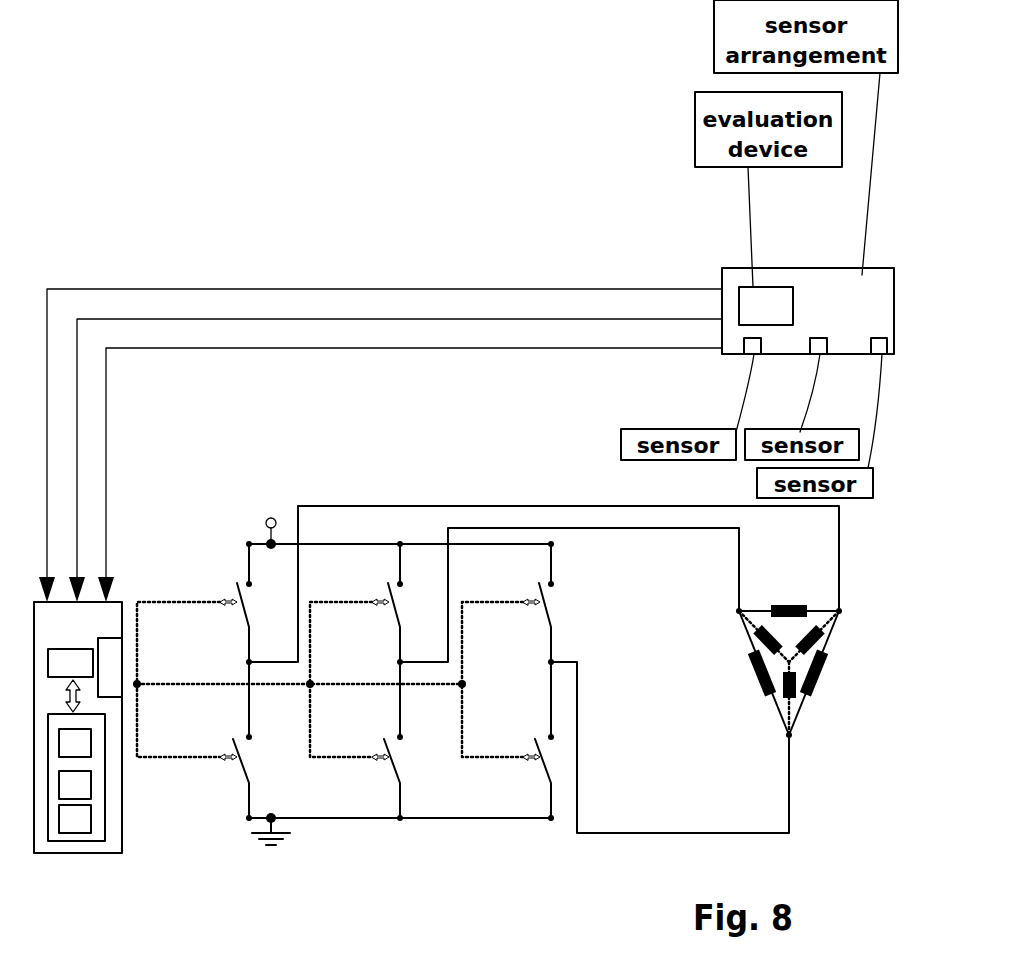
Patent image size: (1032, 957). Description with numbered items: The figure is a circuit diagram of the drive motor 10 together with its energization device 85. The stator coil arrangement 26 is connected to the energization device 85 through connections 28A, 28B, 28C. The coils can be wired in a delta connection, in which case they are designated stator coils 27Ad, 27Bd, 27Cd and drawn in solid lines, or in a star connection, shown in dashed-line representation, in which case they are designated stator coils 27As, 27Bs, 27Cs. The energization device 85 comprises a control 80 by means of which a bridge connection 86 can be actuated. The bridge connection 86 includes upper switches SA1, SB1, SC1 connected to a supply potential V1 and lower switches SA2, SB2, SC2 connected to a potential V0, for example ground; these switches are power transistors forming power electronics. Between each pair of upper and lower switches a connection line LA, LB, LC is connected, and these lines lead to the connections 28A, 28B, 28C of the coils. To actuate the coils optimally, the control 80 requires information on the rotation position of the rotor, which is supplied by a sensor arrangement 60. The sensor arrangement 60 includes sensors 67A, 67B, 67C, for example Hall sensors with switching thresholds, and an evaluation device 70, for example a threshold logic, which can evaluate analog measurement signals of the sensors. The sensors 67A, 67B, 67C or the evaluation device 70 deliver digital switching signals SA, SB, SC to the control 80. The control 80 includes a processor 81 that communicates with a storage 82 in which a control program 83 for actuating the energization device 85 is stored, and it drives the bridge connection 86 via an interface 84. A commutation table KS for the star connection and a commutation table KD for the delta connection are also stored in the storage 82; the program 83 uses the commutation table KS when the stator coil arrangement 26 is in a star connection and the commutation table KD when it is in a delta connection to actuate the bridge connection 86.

The sensor device 10 is at (809, 744).
The stator coil arrangement 26 is at (782, 681).
The stator coil (delta connection) 27Ad is at (795, 588).
The stator coil (delta connection) 27Bd is at (752, 682).
The stator coil (delta connection) 27Cd is at (822, 682).
The stator coil (star connection) 27As is at (822, 641).
The stator coil (star connection) 27Bs is at (752, 642).
The stator coil (star connection) 27Cs is at (784, 700).
The connection 28A is at (839, 611).
The connection 28B is at (739, 611).
The connection 28C is at (789, 735).
The sensor arrangement 60 is at (796, 332).
The evaluation device 70 is at (793, 312).
The sensor 67A is at (729, 385).
The sensor 67B is at (796, 385).
The sensor 67C is at (857, 403).
The control 80 is at (108, 749).
The processor 81 is at (62, 649).
The storage 82 is at (58, 838).
The control program 83 is at (70, 750).
The interface 84 is at (105, 648).
The energization device 85 is at (222, 543).
The bridge connection 86 is at (212, 577).
The switching signal SA is at (455, 289).
The switching signal SB is at (502, 318).
The switching signal SC is at (583, 347).
The upper switch SA1 is at (242, 603).
The lower switch SA2 is at (242, 760).
The upper switch SB1 is at (393, 603).
The lower switch SB2 is at (393, 760).
The upper switch SC1 is at (544, 603).
The lower switch SC2 is at (544, 760).
The potential V0 is at (388, 820).
The supply potential V1 is at (265, 519).
The connection line LA is at (839, 552).
The connection line LB is at (739, 552).
The connection line LC is at (789, 800).
The commutation table KS is at (82, 789).
The commutation table KD is at (82, 823).